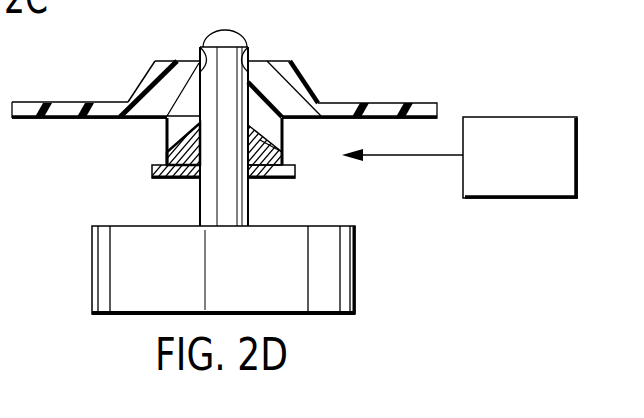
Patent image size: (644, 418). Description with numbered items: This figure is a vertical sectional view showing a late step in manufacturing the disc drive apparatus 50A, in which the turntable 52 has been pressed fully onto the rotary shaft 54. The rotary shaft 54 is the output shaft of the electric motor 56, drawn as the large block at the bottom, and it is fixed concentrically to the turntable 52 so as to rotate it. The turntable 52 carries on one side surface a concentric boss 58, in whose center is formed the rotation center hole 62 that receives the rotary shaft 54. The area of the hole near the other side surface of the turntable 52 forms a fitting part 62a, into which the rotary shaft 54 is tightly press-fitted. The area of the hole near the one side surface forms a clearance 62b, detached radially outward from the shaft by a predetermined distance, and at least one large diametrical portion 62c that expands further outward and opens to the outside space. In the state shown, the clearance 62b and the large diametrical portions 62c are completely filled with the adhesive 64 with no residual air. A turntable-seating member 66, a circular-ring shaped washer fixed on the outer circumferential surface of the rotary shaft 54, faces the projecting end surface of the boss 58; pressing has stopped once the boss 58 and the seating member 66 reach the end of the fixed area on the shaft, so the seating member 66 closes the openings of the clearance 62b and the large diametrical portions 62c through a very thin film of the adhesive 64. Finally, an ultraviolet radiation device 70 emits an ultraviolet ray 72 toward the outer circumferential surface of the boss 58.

The disc drive apparatus 50A is at (224, 157).
The turntable 52 is at (379, 101).
The rotary shaft 54 is at (249, 207).
The electric motor 56 is at (362, 243).
The boss 58 is at (192, 153).
The rotation center hole 62 is at (204, 46).
The fitting part 62a is at (245, 46).
The clearance 62b is at (188, 150).
The large diametrical portion 62c is at (283, 149).
The adhesive 64 is at (284, 141).
The turntable-seating member 66 is at (275, 181).
The ultraviolet radiation device 70 is at (557, 117).
The ultraviolet ray 72 is at (415, 156).